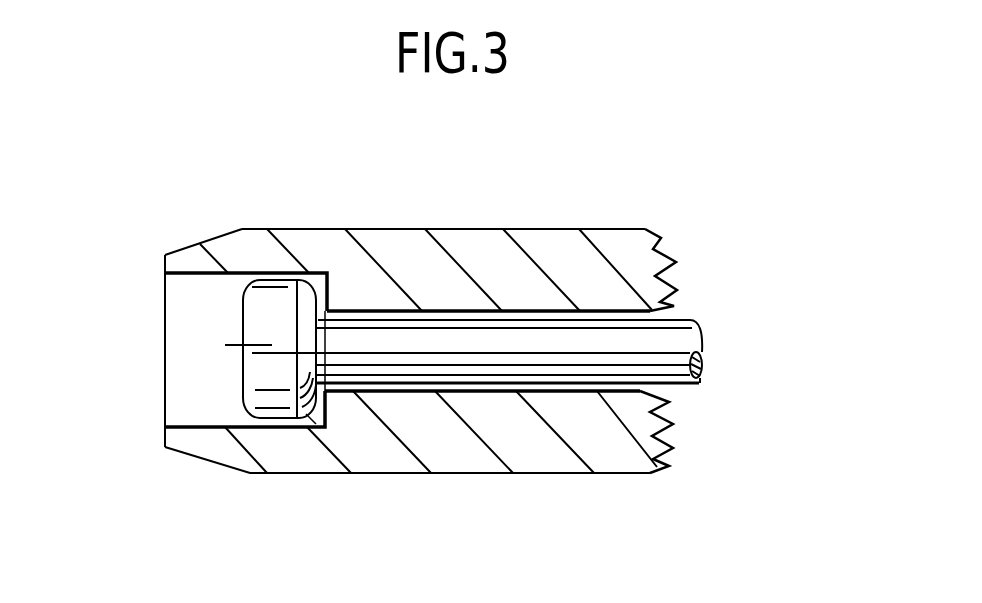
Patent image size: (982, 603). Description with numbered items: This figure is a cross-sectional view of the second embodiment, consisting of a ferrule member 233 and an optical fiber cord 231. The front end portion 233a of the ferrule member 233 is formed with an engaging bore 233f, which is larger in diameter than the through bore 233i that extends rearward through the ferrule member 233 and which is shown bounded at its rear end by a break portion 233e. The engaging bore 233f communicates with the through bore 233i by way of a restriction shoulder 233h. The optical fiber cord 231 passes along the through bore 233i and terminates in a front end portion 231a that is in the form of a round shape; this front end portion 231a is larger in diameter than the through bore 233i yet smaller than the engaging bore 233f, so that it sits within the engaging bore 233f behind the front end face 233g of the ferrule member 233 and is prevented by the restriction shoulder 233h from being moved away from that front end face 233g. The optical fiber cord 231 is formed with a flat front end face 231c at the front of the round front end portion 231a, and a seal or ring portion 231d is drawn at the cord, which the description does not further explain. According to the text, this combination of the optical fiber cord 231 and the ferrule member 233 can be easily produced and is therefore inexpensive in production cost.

The ferrule member 233 is at (506, 229).
The front end portion 233a is at (203, 247).
The engaging bore 233f is at (227, 276).
The front end face 233g is at (164, 272).
The restriction shoulder 233h is at (332, 306).
The threaded portion 233e is at (627, 253).
The through bore 233i is at (641, 391).
The optical fiber cord 231 is at (676, 322).
The front end portion 231a is at (247, 348).
The front end face 231c is at (247, 342).
The seal ring 231d is at (703, 367).